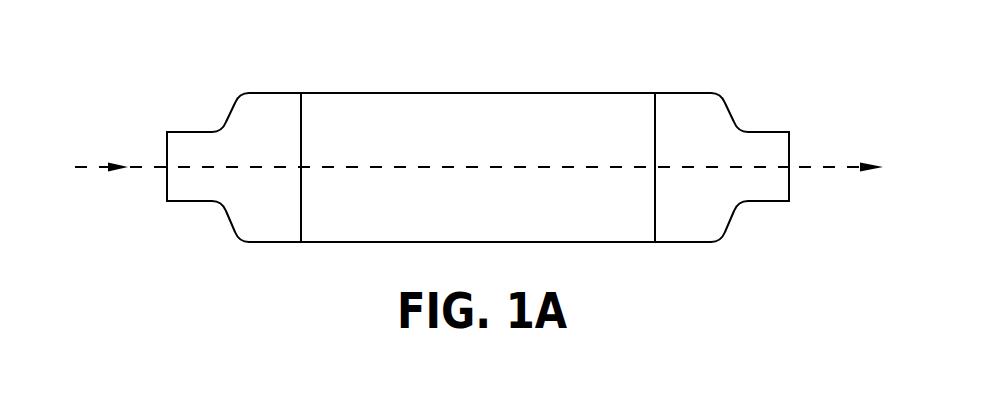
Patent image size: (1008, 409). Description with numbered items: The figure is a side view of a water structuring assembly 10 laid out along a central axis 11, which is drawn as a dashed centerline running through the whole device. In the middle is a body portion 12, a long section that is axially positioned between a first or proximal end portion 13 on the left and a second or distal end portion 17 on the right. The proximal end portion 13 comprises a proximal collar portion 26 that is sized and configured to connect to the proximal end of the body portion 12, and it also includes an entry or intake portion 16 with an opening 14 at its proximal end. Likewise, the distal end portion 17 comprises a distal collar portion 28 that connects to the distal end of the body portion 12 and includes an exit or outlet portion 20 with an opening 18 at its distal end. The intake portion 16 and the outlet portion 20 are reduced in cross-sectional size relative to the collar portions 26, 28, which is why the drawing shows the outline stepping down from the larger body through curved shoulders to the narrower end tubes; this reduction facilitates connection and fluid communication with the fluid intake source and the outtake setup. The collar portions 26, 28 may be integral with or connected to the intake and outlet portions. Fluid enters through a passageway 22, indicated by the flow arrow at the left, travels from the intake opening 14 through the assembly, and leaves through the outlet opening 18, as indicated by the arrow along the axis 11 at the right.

The water structuring assembly 10 is at (212, 87).
The axis 11 is at (815, 165).
The body portion 12 is at (438, 62).
The proximal end portion 13 is at (210, 226).
The intake opening 14 is at (164, 150).
The intake portion 16 is at (188, 188).
The distal end portion 17 is at (748, 217).
The outlet opening 18 is at (790, 180).
The outlet portion 20 is at (745, 132).
The passageway 22 is at (97, 168).
The proximal collar portion 26 is at (264, 103).
The distal collar portion 28 is at (693, 98).